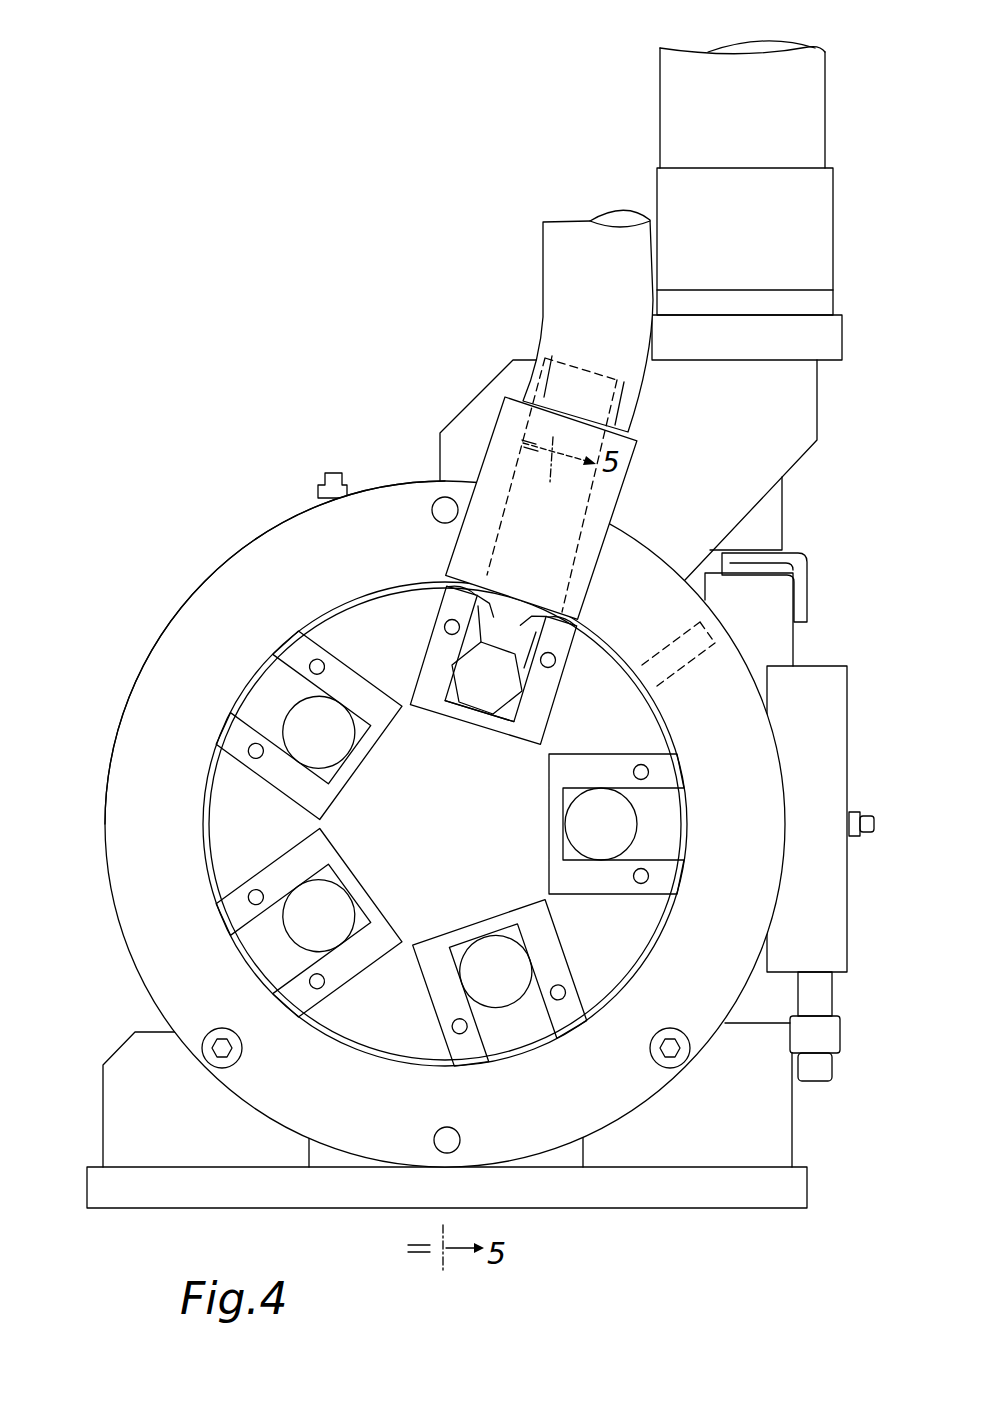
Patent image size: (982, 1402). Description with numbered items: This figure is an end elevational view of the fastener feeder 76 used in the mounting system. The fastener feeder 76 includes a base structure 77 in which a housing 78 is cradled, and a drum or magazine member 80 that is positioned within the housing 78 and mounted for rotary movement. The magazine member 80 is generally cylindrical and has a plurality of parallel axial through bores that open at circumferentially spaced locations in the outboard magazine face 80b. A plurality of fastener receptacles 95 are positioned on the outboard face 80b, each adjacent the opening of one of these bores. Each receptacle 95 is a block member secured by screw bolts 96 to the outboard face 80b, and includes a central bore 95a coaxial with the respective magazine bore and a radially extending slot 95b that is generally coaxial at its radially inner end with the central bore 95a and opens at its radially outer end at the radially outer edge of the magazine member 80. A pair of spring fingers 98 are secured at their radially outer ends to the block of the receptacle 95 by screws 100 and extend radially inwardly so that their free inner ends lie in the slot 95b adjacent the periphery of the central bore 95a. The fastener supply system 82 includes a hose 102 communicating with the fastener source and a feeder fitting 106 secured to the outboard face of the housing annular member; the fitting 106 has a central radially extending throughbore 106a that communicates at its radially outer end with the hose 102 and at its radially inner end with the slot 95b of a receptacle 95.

The fastener feeder 76 is at (214, 520).
The base structure 77 is at (130, 1113).
The housing 78 is at (150, 646).
The drum or magazine member 80 is at (634, 942).
The outboard magazine face 80b is at (383, 1018).
The fastener supply system 82 is at (618, 200).
The fastener receptacle 95 is at (442, 722).
The central bore 95a is at (498, 643).
The radially extending slot 95b is at (545, 604).
The screw bolts 96 is at (444, 624).
The spring fingers 98 is at (532, 646).
The screws 100 is at (580, 626).
The hose 102 is at (543, 284).
The feeder fitting 106 is at (500, 410).
The central radially extending throughbore 106a is at (520, 487).